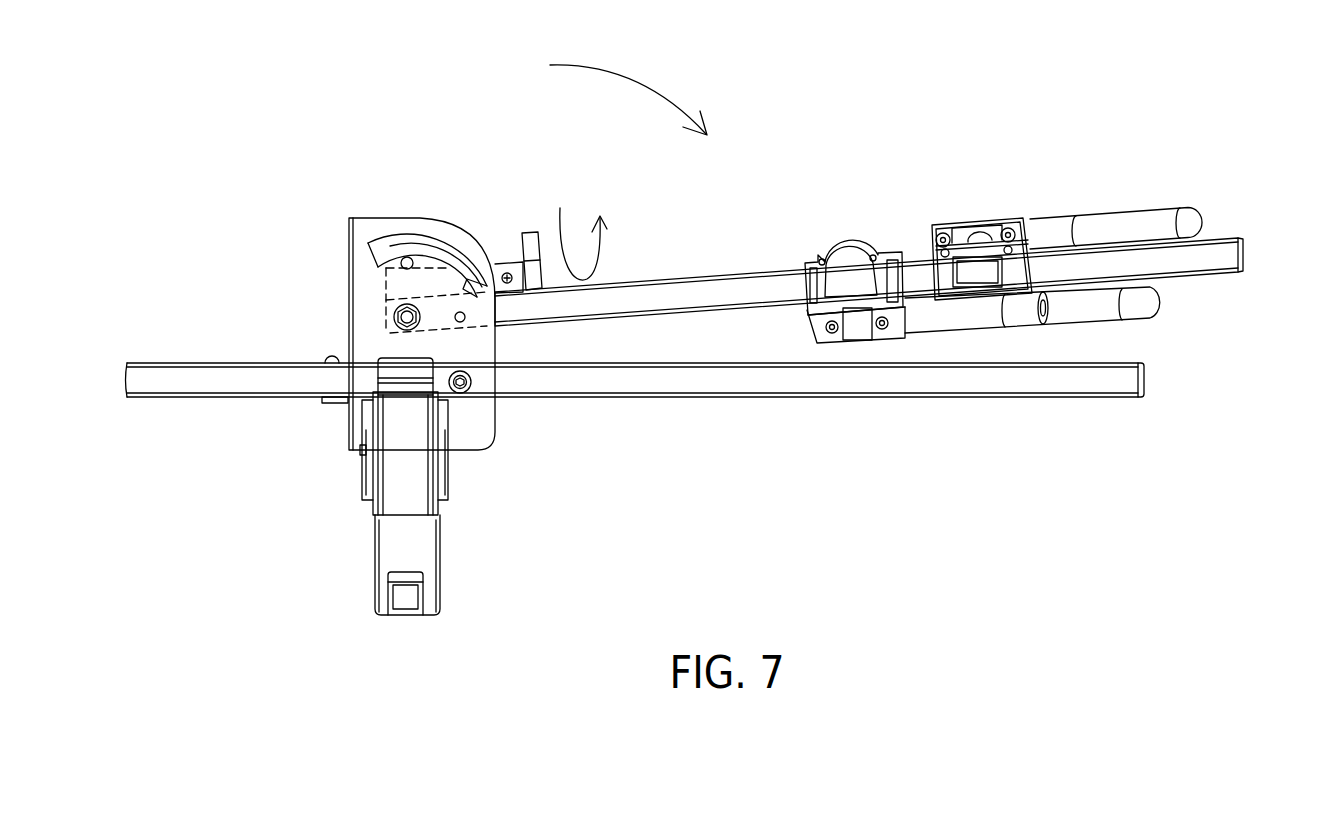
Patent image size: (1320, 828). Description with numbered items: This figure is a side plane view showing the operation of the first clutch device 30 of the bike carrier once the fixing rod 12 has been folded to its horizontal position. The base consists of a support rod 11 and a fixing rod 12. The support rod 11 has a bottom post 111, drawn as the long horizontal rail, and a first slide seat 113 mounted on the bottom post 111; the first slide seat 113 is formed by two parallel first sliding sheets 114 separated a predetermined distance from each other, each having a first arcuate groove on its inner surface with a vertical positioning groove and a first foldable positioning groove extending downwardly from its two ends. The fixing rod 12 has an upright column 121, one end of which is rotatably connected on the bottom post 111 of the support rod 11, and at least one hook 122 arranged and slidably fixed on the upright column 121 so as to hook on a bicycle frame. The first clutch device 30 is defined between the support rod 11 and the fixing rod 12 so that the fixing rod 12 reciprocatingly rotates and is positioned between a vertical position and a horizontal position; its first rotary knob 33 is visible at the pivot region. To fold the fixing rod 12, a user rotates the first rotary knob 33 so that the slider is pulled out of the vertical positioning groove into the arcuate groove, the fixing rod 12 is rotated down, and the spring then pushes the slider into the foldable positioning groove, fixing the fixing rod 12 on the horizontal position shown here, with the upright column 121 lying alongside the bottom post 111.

The support rod 11 is at (635, 457).
The bottom post 111 is at (804, 383).
The first slide seat 113 is at (341, 416).
The first sliding sheets 114 is at (372, 334).
The fixing rod 12 is at (870, 206).
The upright column 121 is at (1215, 255).
The hook 122 is at (1100, 225).
The first clutch device 30 is at (565, 196).
The first rotary knob 33 is at (527, 232).